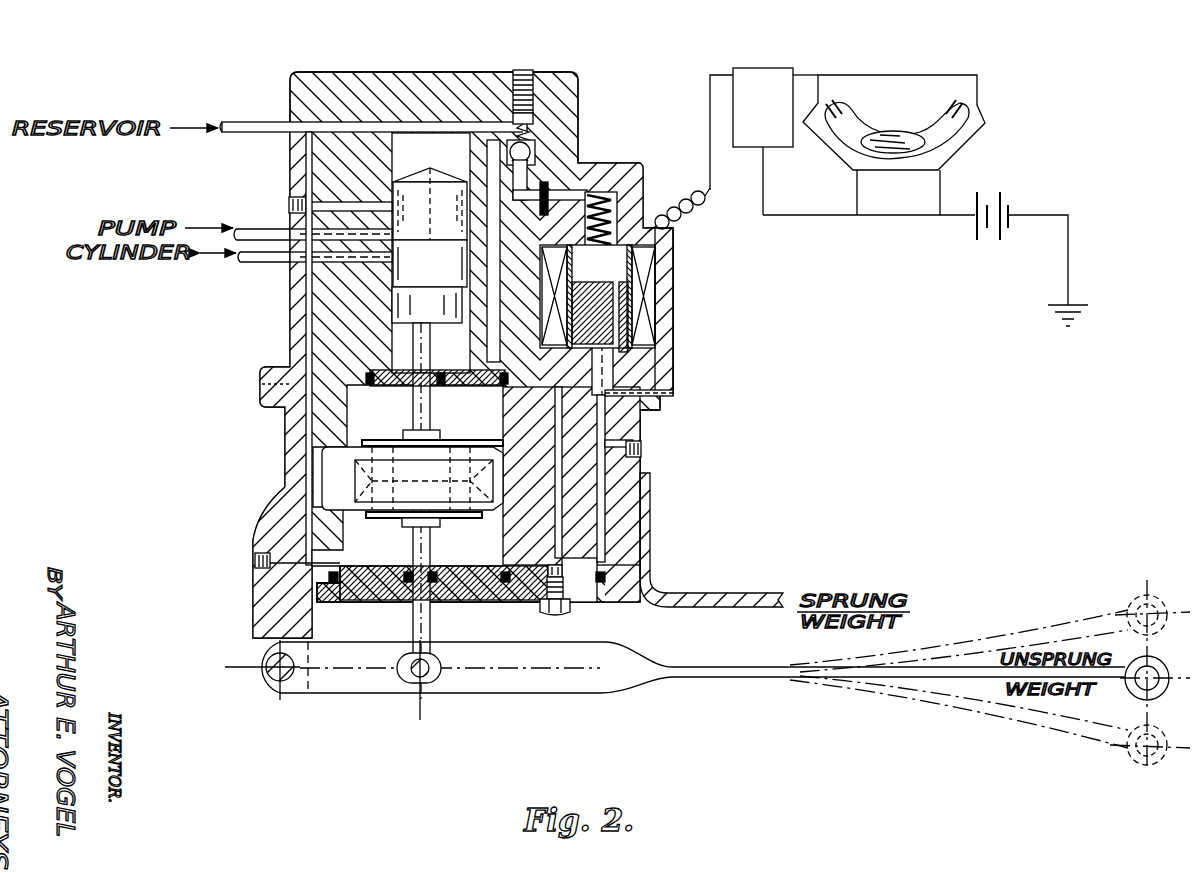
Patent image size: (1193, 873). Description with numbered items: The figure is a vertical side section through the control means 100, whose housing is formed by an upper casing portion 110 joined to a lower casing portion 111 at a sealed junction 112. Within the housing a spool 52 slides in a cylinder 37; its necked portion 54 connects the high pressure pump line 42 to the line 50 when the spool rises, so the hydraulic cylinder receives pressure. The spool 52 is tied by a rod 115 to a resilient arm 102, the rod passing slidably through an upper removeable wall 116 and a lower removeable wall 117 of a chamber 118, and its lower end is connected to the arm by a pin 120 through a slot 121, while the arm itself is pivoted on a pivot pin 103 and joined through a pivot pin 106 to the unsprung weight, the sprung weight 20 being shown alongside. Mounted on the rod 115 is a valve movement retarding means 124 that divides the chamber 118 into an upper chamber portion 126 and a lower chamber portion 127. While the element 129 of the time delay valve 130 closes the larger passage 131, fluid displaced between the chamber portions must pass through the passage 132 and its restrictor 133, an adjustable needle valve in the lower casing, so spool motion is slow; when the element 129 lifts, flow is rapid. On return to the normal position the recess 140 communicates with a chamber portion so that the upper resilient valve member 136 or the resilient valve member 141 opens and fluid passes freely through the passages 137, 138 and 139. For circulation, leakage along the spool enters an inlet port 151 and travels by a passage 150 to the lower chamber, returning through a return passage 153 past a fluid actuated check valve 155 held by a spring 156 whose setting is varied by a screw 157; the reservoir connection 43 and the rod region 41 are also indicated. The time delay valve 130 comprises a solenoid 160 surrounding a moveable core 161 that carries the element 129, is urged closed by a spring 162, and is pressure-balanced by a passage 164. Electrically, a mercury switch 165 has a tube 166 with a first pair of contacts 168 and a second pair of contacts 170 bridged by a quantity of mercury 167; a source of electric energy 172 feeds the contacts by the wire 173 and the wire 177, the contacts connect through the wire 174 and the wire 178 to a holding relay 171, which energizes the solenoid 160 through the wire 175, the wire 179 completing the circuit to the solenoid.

The control means 100 is at (288, 78).
The cylinder 37 is at (440, 140).
The screw 157 is at (535, 72).
The spring 156 is at (530, 128).
The fluid actuated check valve 155 is at (531, 150).
The return passage 153 is at (560, 195).
The spring 162 is at (662, 215).
The wire 175 is at (709, 125).
The wire 174 is at (820, 95).
The wire 178 is at (950, 78).
The holding relay 171 is at (782, 120).
The mercury switch 165 is at (870, 118).
The second pair of contacts 170 is at (968, 108).
The tube 166 is at (925, 138).
The quantity of mercury 167 is at (905, 150).
The first pair of contacts 168 is at (832, 118).
The wire 173 is at (858, 172).
The wire 177 is at (941, 172).
The wire 179 is at (775, 215).
The source of electric energy 172 is at (985, 235).
The solenoid 160 is at (640, 250).
The moveable core 161 is at (600, 300).
The time delay valve 130 is at (662, 313).
The passage 164 is at (622, 320).
The element 129 is at (672, 393).
The passage 131 is at (600, 480).
The passage 132 is at (560, 500).
The sprung weight 20 is at (702, 590).
The pivot pin 106 is at (1140, 670).
The reservoir port 43 is at (262, 130).
The inlet port 151 is at (296, 200).
The line 42 is at (262, 230).
The line 50 is at (265, 262).
The passage 150 is at (290, 280).
The upper casing portion 110 is at (292, 357).
The sealed junction 112 is at (266, 384).
The lower casing portion 111 is at (262, 400).
The upper chamber portion 126 is at (290, 416).
The passage 138 is at (330, 475).
The recess 140 is at (340, 485).
The valve movement retarding means 124 is at (272, 536).
The lower chamber portion 127 is at (256, 558).
The upper removeable wall 116 is at (386, 388).
The upper resilient valve member 136 is at (445, 440).
The passage 137 is at (364, 452).
The passage 139 is at (400, 516).
The resilient valve member 141 is at (460, 522).
The lower removeable wall 117 is at (360, 600).
The chamber 118 is at (406, 594).
The rod 115 is at (431, 618).
The restrictor 133 is at (566, 580).
The pivot pin 103 is at (288, 681).
The pin 120 is at (400, 672).
The slot 121 is at (432, 670).
The resilient arm 102 is at (500, 685).
The spool 52 is at (445, 203).
The necked portion 54 is at (445, 266).
The piston rod 41 is at (431, 340).